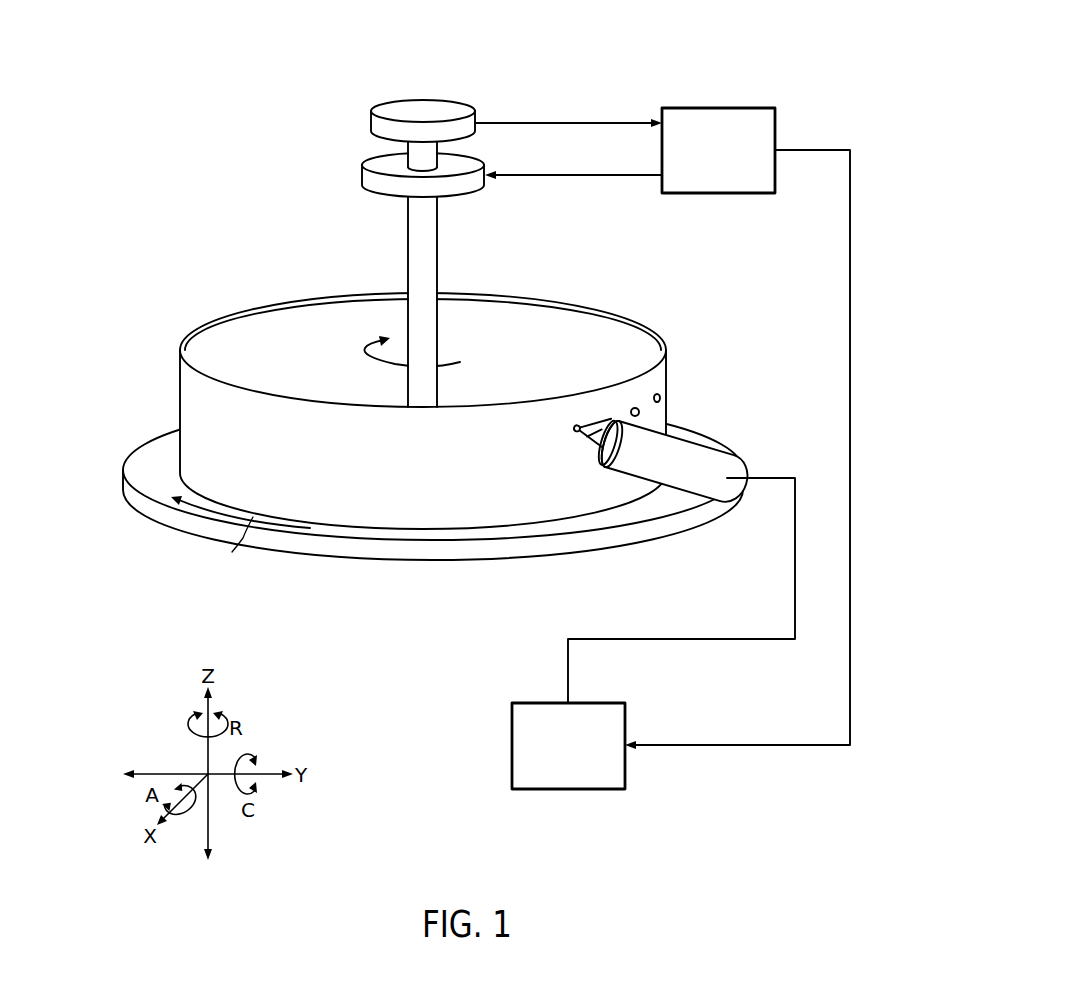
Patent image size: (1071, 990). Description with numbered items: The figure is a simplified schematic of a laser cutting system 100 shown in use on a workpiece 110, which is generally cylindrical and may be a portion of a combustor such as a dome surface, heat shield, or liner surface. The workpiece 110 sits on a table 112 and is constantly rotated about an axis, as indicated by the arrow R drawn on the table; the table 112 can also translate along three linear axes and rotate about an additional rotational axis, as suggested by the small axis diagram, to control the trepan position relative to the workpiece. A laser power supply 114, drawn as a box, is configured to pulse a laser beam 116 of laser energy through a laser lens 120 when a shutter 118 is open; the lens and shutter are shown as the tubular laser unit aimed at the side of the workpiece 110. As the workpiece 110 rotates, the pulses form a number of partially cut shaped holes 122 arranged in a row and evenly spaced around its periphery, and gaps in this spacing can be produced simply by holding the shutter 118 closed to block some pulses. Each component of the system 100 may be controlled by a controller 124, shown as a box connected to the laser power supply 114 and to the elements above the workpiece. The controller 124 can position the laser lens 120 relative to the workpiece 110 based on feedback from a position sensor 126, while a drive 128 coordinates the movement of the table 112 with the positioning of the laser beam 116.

The laser cutting system 100 is at (258, 67).
The workpiece 110 is at (543, 312).
The table 112 is at (612, 515).
The laser power supply 114 is at (512, 750).
The laser beam 116 is at (795, 575).
The shutter 118 is at (597, 437).
The laser lens 120 is at (703, 452).
The shaped holes 122 is at (662, 397).
The controller 124 is at (716, 108).
The position sensor 126 is at (422, 102).
The drive 128 is at (366, 180).